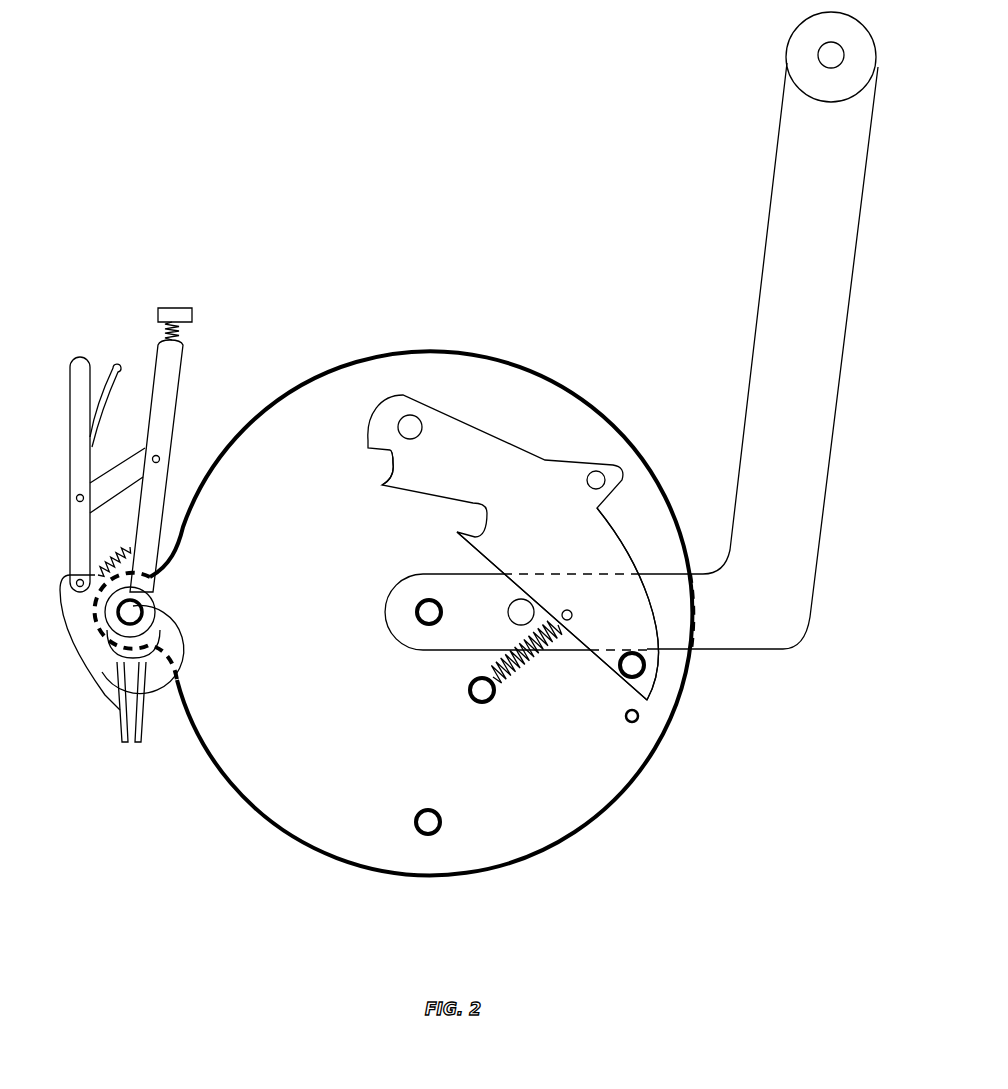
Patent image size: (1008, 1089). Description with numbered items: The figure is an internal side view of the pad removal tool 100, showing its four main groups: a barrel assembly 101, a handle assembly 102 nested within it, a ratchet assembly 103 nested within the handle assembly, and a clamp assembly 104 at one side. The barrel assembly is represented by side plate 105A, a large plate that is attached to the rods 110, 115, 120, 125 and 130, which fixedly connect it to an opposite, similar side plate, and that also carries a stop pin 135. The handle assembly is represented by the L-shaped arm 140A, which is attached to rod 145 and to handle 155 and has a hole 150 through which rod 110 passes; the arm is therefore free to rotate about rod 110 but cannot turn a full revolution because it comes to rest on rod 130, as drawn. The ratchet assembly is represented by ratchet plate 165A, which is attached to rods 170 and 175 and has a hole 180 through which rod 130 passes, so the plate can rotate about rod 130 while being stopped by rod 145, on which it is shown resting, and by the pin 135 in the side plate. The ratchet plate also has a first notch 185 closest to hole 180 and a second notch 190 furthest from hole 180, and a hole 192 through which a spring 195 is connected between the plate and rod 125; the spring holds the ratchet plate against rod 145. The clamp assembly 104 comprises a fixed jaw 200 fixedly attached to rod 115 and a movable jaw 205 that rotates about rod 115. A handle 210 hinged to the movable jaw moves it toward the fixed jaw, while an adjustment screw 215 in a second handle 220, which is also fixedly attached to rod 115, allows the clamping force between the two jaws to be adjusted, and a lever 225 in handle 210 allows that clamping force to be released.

The pad removal tool 100 is at (205, 142).
The barrel assembly 101 is at (405, 336).
The handle assembly 102 is at (710, 221).
The ratchet assembly 103 is at (520, 415).
The clamp assembly 104 is at (207, 343).
The side plate 105A is at (394, 613).
The rod 110 is at (430, 614).
The rod 115 is at (133, 612).
The rod 120 is at (435, 822).
The rod 125 is at (485, 698).
The rod 130 is at (632, 665).
The stop pin 135 is at (628, 718).
The L-shaped arm 140A is at (755, 356).
The rod 145 is at (521, 614).
The hole 150 is at (429, 612).
The handle 155 is at (815, 100).
The ratchet plate 165A is at (513, 547).
The rod 170 is at (412, 428).
The rod 175 is at (594, 482).
The hole 180 is at (630, 655).
The first notch 185 is at (492, 518).
The second notch 190 is at (395, 472).
The hole 192 is at (567, 611).
The spring 195 is at (535, 670).
The fixed jaw 200 is at (152, 692).
The movable jaw 205 is at (107, 684).
The handle 210 is at (82, 362).
The adjustment screw 215 is at (172, 306).
The handle 220 is at (167, 388).
The lever 225 is at (112, 366).